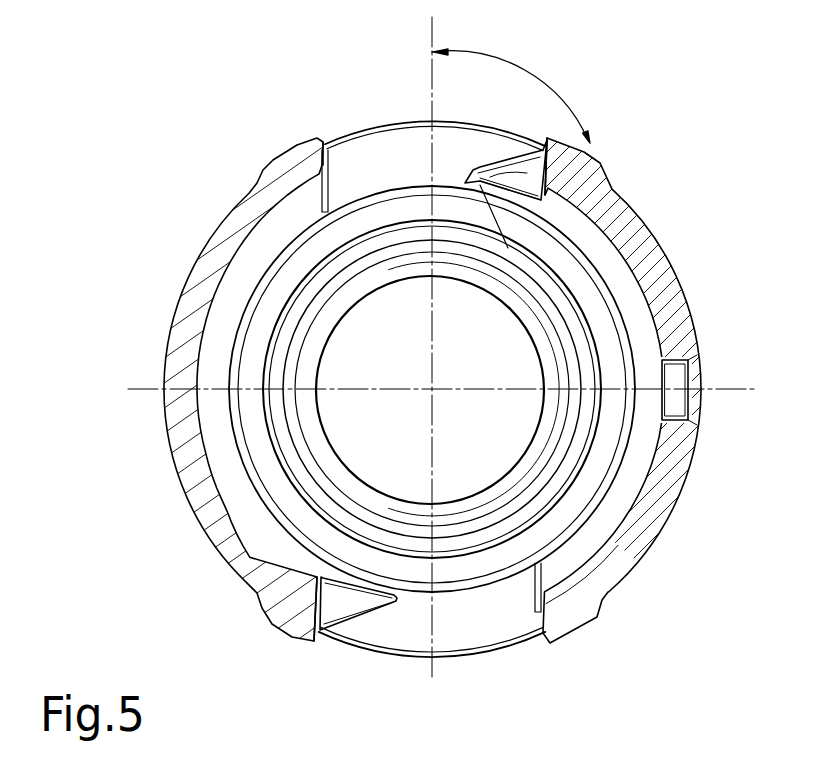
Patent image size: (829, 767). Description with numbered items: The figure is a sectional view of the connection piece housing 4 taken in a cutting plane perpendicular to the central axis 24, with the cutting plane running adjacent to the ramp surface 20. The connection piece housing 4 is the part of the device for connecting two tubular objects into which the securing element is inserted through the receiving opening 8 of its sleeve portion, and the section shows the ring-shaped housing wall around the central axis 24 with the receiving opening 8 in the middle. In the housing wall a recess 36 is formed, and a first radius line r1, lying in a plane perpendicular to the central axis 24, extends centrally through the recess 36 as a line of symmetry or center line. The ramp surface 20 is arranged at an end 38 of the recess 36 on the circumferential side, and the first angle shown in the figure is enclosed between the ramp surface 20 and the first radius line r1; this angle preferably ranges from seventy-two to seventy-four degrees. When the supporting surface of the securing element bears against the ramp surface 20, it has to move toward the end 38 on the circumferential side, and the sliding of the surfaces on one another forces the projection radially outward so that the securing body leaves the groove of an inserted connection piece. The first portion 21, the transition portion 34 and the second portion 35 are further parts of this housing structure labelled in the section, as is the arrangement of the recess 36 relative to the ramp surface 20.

The connection piece housing 4 is at (630, 252).
The receiving opening 8 is at (630, 305).
The ramp surface 20 is at (507, 150).
The first portion 21 is at (528, 181).
The central axis 24 is at (436, 388).
The transition portion 34 is at (466, 178).
The second portion 35 is at (508, 248).
The recess 36 is at (363, 160).
The end on circumferential side 38 is at (543, 130).
The first radius line r1 is at (430, 32).